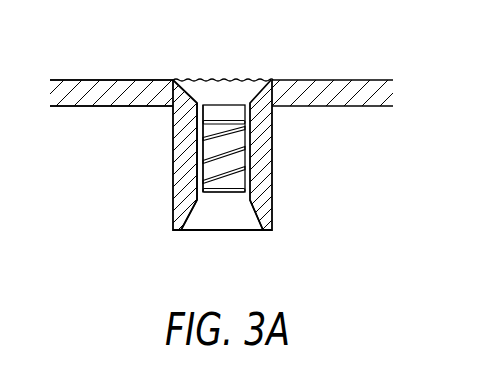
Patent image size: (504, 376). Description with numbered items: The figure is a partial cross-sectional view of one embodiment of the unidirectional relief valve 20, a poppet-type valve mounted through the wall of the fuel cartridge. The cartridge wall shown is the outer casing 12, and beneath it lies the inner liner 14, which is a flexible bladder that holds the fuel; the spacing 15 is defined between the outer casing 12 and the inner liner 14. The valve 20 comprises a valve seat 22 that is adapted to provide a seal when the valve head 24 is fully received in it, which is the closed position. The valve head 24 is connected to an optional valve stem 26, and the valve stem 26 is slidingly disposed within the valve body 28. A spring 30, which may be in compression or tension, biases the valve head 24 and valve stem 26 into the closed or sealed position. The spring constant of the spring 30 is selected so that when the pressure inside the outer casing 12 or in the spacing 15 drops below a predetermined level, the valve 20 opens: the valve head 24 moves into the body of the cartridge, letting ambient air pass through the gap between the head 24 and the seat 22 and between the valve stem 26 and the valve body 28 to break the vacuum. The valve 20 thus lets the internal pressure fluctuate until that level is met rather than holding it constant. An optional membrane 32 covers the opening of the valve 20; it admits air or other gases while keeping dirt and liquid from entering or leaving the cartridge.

The outer casing 12 is at (90, 95).
The inner liner 14 is at (111, 93).
The spacing 15 is at (335, 256).
The unidirectional relief valve 20 is at (324, 50).
The valve seat 22 is at (257, 200).
The valve head 24 is at (200, 222).
The valve stem 26 is at (222, 145).
The valve body 28 is at (188, 173).
The spring 30 is at (210, 132).
The membrane 32 is at (208, 79).